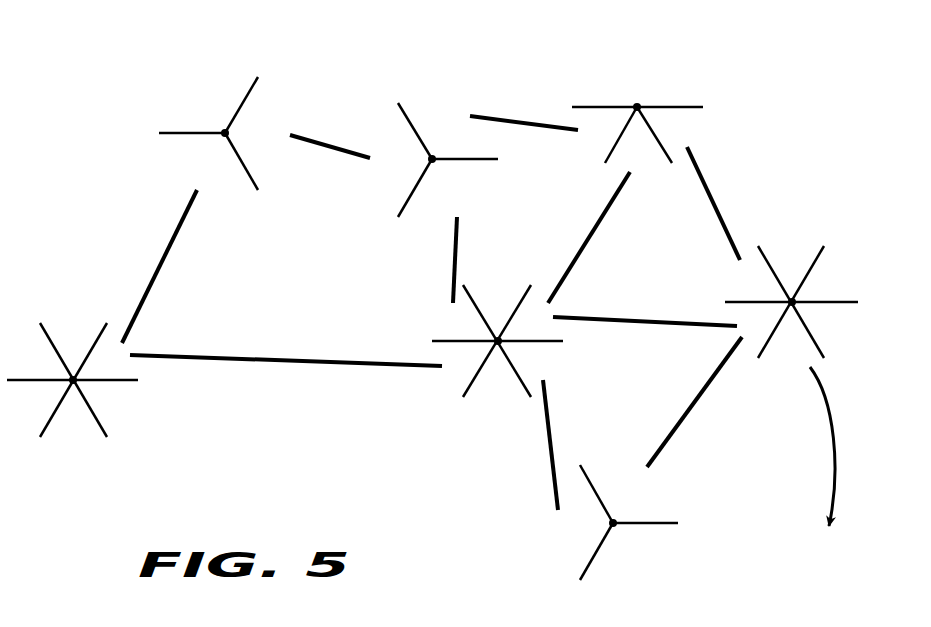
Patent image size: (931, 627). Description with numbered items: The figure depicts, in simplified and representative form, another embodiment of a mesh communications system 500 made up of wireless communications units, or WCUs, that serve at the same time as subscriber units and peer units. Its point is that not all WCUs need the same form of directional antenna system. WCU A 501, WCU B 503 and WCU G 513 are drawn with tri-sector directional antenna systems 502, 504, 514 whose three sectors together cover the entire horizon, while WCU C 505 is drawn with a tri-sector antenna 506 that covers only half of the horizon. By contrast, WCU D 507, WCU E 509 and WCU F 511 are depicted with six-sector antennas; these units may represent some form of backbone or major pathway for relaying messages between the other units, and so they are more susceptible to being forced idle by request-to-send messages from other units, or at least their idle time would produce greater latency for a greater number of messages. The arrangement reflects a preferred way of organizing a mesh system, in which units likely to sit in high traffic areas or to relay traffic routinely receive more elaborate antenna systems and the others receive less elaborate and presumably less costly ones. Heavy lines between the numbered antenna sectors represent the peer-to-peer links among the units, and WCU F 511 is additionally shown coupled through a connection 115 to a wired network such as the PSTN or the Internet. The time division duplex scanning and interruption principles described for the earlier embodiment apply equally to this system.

The mesh communications system 500 is at (158, 510).
The WCU A 501 is at (195, 133).
The tri-sector directional antenna system 502 is at (256, 91).
The WCU B 503 is at (477, 101).
The tri-sector directional antenna system 504 is at (410, 125).
The WCU C 505 is at (672, 105).
The tri-sector antenna 506 is at (668, 105).
The WCU D 507 is at (436, 393).
The WCU E 509 is at (57, 312).
The WCU F 511 is at (817, 228).
The WCU G 513 is at (570, 522).
The tri-sector directional antenna system 514 is at (670, 520).
The wired network connection 115 is at (826, 450).